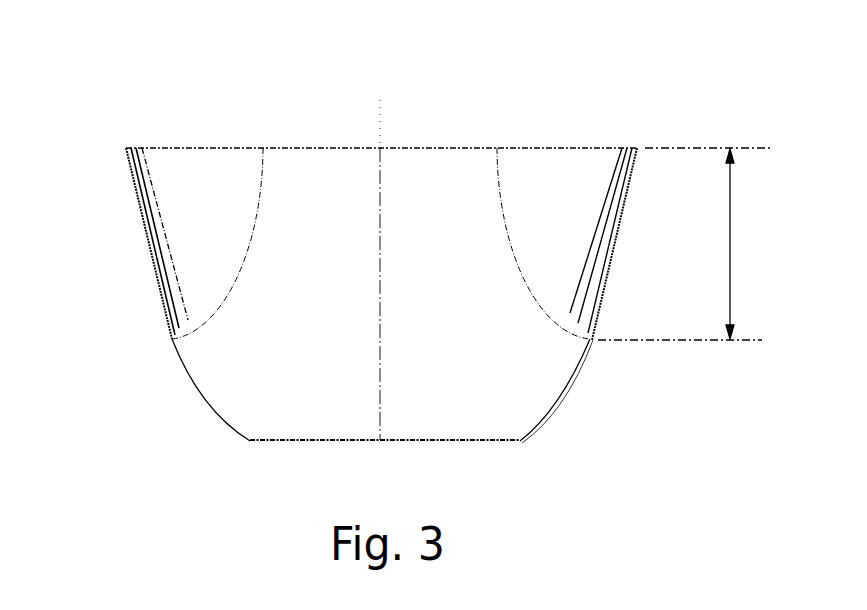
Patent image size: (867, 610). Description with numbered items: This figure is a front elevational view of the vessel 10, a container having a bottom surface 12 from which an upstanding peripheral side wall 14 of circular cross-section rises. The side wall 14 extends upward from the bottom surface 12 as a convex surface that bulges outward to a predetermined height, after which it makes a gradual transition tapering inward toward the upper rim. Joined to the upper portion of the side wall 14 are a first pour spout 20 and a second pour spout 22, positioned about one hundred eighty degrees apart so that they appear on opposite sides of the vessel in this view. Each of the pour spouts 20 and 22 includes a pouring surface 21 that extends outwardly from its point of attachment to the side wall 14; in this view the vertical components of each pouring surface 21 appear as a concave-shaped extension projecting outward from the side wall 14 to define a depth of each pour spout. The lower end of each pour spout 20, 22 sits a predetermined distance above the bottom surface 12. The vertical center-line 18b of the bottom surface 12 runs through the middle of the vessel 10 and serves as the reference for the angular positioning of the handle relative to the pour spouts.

The vessel 10 is at (235, 134).
The bottom surface 12 is at (345, 442).
The side wall 14 is at (582, 370).
The vertical center-line 18b is at (381, 57).
The first pour spout 20 is at (620, 228).
The pouring surface 21 is at (220, 209).
The second pour spout 22 is at (143, 217).